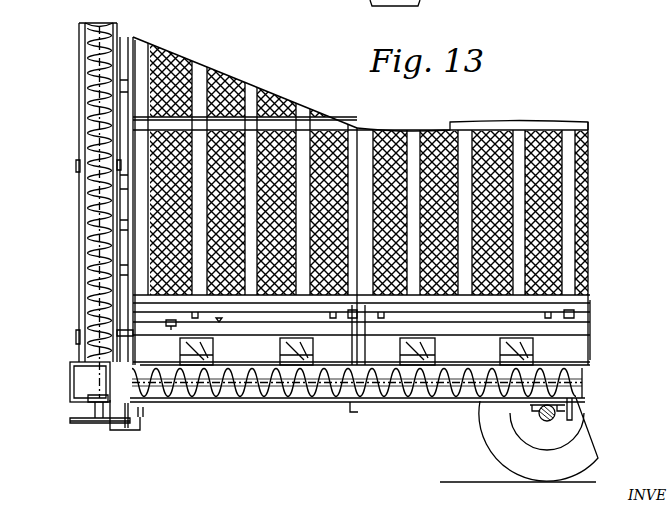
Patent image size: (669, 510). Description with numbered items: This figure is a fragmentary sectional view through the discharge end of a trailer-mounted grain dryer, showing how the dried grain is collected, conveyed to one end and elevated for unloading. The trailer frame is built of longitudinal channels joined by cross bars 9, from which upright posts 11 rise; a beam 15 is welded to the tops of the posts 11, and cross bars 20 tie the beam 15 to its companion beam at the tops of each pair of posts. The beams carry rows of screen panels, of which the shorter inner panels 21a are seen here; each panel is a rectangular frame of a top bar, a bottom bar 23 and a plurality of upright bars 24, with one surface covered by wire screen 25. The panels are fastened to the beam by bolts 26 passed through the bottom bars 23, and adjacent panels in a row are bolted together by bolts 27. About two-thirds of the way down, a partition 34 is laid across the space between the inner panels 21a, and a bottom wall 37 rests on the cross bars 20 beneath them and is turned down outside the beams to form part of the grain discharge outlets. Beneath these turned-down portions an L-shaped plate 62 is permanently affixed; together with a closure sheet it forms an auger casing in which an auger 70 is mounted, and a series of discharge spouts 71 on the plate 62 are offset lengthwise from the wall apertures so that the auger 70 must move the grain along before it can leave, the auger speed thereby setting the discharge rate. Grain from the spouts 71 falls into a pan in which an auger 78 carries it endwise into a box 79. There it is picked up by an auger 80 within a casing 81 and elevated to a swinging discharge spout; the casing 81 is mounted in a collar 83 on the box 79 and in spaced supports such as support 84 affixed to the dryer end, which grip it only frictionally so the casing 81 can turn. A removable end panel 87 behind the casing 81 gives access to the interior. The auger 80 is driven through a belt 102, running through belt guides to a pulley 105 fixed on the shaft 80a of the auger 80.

The cross bar 9 is at (348, 412).
The post 11 is at (360, 353).
The beam 15 is at (502, 320).
The cross bar 20 is at (350, 318).
The inner screen panel 21a is at (227, 83).
The bottom bar 23 is at (207, 300).
The upright bar 24 is at (198, 82).
The wire screen 25 is at (268, 109).
The bolt 26 is at (168, 325).
The bolt 27 is at (376, 131).
The partition 34 is at (295, 116).
The bottom wall 37 is at (467, 313).
The L-shaped plate 62 is at (380, 351).
The auger 70 is at (185, 348).
The discharge spout 71 is at (218, 353).
The auger 78 is at (427, 395).
The box 79 is at (70, 378).
The auger 80 is at (87, 274).
The shaft 80a is at (95, 413).
The casing 81 is at (78, 224).
The collar 83 is at (78, 345).
The support 84 is at (78, 166).
The removable end panel 87 is at (132, 238).
The belt 102 is at (72, 419).
The pulley 105 is at (92, 427).